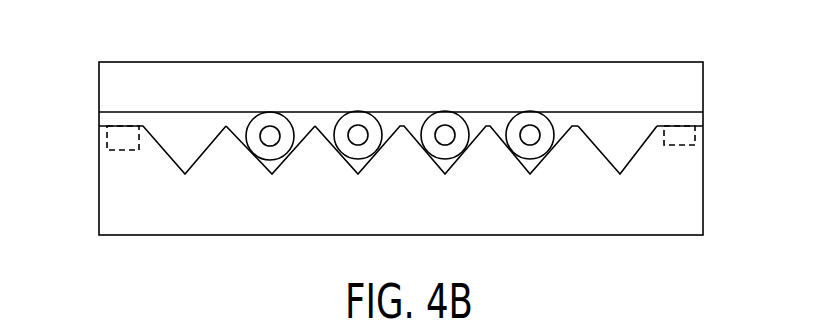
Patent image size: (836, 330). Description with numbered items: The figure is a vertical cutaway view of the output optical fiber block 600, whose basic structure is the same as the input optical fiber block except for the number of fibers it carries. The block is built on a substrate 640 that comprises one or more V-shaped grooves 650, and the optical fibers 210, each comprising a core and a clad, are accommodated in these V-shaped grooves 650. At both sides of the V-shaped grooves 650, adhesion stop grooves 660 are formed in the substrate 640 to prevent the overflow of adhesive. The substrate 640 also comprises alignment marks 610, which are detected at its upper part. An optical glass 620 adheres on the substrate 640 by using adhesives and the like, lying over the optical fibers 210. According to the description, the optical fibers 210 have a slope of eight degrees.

The output optical fiber block 600 is at (716, 78).
The alignment marks 610 is at (700, 137).
The optical glass 620 is at (110, 93).
The substrate 640 is at (110, 213).
The V-shaped grooves 650 is at (270, 170).
The adhesion stop grooves 660 is at (607, 156).
The optical fibers 210 is at (270, 112).